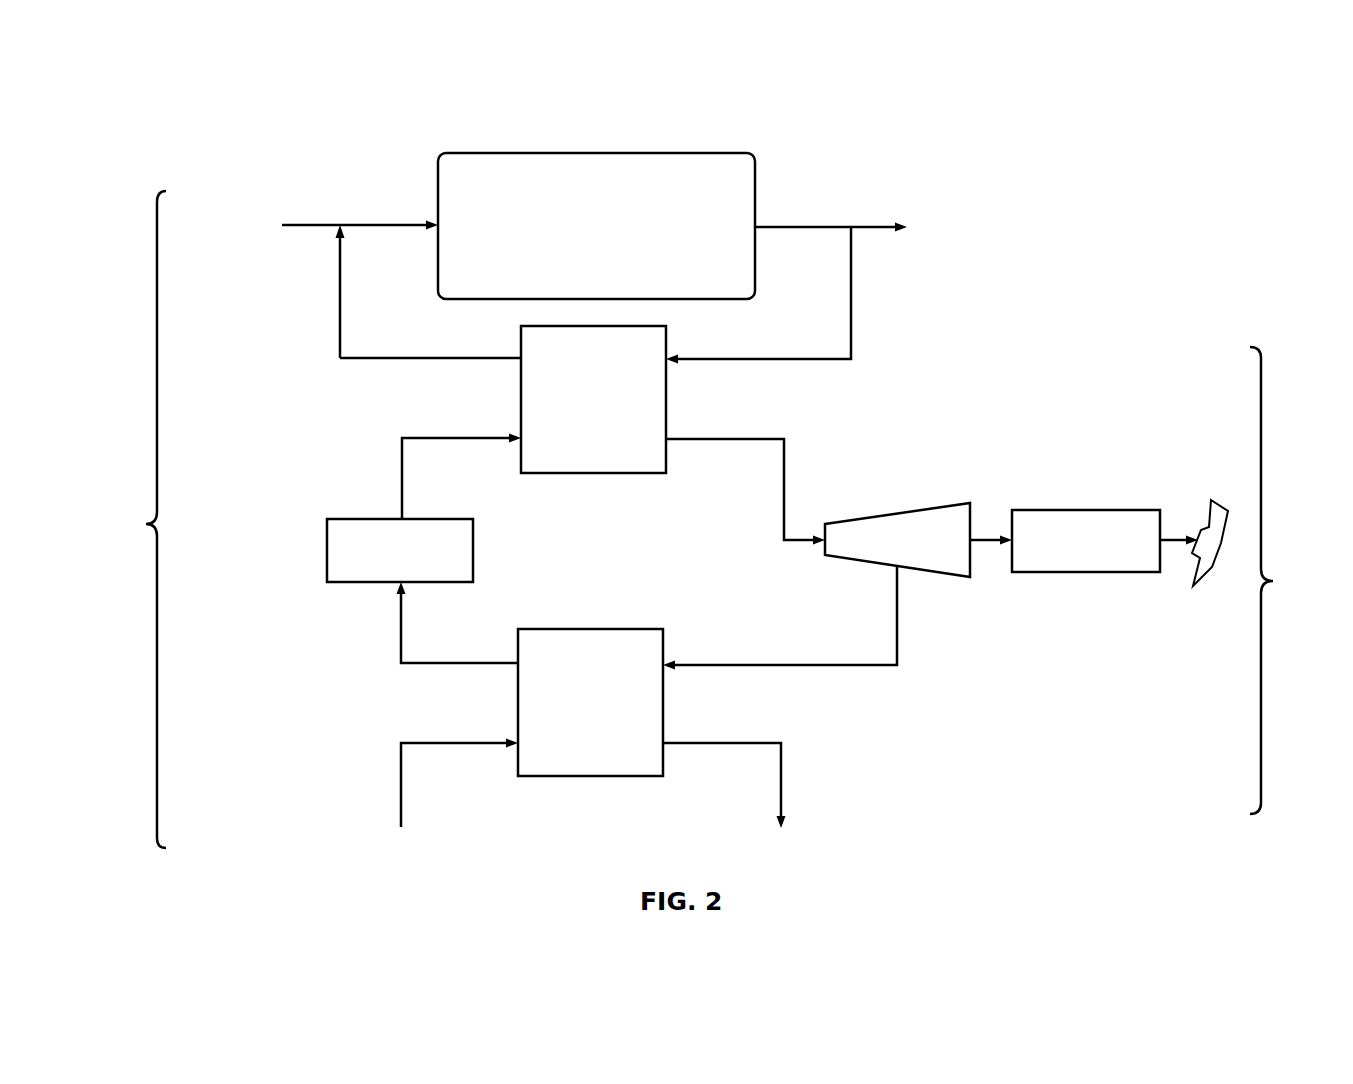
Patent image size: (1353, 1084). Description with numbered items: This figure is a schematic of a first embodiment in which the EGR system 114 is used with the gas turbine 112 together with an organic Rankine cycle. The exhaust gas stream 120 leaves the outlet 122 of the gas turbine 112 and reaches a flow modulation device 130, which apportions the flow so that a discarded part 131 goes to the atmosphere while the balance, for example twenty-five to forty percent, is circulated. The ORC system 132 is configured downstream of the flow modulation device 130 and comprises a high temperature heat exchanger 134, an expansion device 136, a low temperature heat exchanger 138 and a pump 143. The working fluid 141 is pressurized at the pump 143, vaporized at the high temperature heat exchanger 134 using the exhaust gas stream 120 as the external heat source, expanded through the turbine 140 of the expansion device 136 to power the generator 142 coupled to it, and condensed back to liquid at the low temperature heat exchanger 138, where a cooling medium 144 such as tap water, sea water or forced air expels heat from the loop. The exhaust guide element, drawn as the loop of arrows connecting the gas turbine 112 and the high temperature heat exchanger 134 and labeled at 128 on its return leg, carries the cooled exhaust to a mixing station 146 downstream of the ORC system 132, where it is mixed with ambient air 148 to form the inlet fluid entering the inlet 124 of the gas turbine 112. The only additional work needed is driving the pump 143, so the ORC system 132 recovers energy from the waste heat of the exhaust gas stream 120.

The gas turbine 112 is at (502, 152).
The EGR system 114 is at (133, 519).
The exhaust gas stream 120 is at (785, 226).
The outlet 122 is at (773, 118).
The inlet 124 is at (411, 134).
The recycle stream 128 is at (326, 331).
The flow modulation device 130 is at (861, 217).
The discarded part of exhaust gas stream 131 is at (873, 230).
The ORC system 132 is at (1254, 580).
The high temperature heat exchanger 134 is at (667, 400).
The expansion device 136 is at (967, 468).
The low temperature heat exchanger 138 is at (664, 700).
The turbine 140 is at (887, 512).
The working fluid 141 is at (401, 480).
The generator 142 is at (1073, 509).
The pump 143 is at (388, 518).
The cooling medium 144 is at (401, 786).
The mixing station 146 is at (333, 215).
The ambient air 148 is at (322, 228).